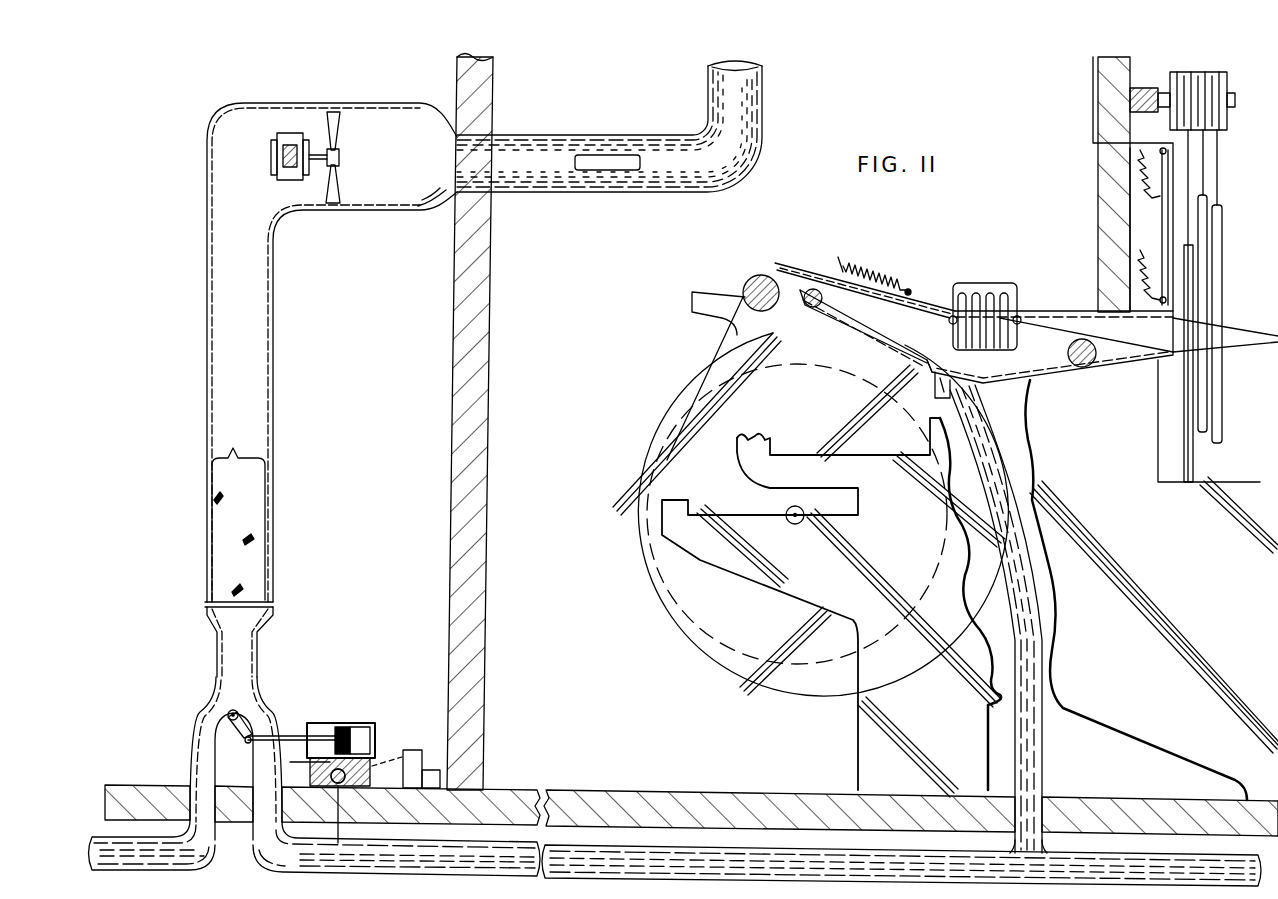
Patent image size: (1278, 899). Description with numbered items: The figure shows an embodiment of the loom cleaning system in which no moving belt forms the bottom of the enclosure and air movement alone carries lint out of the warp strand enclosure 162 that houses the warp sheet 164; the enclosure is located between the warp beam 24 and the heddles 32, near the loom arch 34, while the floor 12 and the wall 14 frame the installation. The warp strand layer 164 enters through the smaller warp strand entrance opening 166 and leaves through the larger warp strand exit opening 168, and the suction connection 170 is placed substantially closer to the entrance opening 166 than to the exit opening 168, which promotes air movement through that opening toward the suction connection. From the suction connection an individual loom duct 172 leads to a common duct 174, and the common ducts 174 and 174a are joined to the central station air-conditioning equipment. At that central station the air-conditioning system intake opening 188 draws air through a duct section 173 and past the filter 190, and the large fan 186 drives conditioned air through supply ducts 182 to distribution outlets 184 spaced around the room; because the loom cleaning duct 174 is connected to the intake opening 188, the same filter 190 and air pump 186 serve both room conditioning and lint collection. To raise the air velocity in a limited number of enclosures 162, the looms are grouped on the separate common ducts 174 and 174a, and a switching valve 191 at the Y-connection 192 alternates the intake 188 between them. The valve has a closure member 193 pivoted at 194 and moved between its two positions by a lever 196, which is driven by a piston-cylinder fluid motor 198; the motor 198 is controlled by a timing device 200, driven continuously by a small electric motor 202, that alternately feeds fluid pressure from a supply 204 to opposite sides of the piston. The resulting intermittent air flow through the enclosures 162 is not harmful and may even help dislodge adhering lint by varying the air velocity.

The floor 12 is at (706, 798).
The wall 14 is at (490, 296).
The warp beam 24 is at (652, 440).
The heddles 32 is at (1187, 284).
The arch 34 is at (1117, 88).
The warp strand enclosure 162 is at (914, 333).
The warp sheet 164 is at (890, 276).
The warp strand entrance opening 166 is at (777, 270).
The warp strand exit opening 168 is at (1165, 330).
The suction connection 170 is at (950, 383).
The individual loom duct 172 is at (1040, 757).
The duct section 173 is at (387, 214).
The common duct 174 is at (338, 224).
The common duct 174a is at (256, 878).
The supply duct 182 is at (748, 97).
The distribution outlet 184 is at (612, 163).
The fan 186 is at (339, 118).
The air-conditioning system intake opening 188 is at (262, 632).
The filter 190 is at (273, 490).
The switching valve 191 is at (231, 688).
The Y-connection 192 is at (258, 686).
The closure member 193 is at (214, 703).
The pivot 194 is at (240, 716).
The lever 196 is at (215, 740).
The piston-cylinder fluid motor 198 is at (357, 724).
The timing device 200 is at (347, 788).
The small electric motor 202 is at (430, 748).
The fluid pressure supply 204 is at (338, 835).